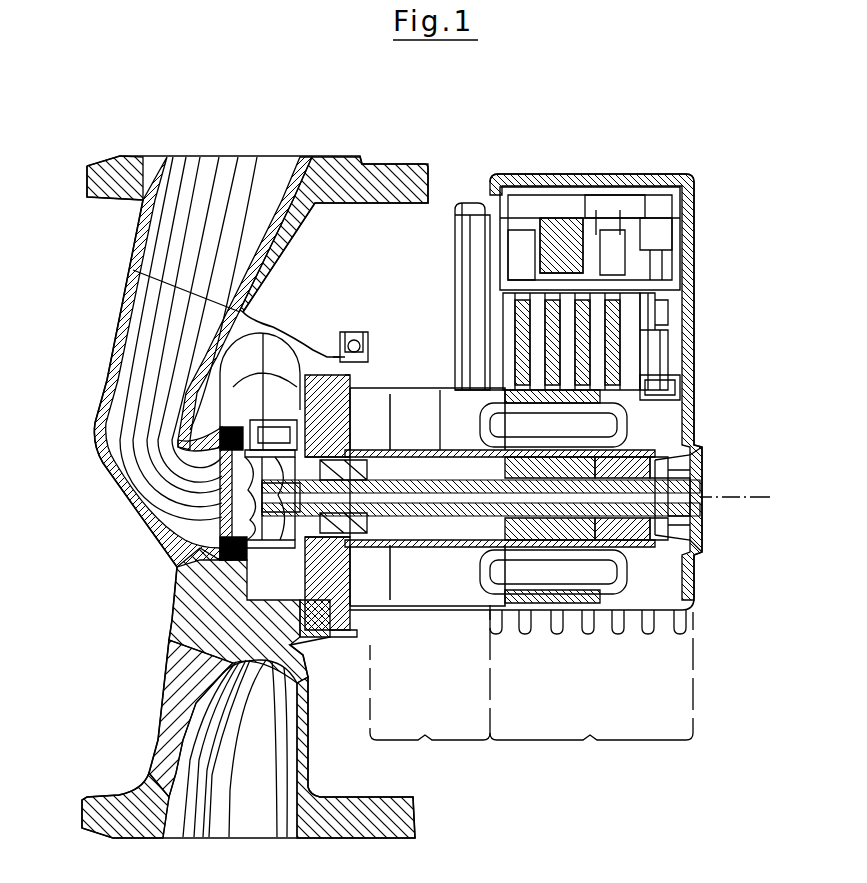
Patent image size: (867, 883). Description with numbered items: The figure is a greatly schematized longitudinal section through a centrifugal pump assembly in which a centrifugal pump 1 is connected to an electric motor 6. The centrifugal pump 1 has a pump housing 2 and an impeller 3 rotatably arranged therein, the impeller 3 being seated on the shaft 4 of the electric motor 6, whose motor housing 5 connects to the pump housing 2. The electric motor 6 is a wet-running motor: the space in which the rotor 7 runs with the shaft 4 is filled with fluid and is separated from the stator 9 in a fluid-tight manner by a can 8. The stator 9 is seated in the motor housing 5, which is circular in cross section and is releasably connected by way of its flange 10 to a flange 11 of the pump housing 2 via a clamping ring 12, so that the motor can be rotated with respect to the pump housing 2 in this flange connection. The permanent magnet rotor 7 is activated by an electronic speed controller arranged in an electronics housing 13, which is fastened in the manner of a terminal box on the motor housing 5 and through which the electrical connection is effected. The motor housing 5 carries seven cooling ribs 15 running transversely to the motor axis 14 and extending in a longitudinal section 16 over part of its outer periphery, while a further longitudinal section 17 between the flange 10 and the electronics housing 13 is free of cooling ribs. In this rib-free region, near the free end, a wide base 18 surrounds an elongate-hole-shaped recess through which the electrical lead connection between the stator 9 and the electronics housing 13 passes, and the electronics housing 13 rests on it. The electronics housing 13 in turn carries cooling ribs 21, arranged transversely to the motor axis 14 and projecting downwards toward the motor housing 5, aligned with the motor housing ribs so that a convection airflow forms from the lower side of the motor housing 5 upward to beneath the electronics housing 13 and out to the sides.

The centrifugal pump 1 is at (238, 152).
The pump housing 2 is at (177, 630).
The impeller 3 is at (223, 560).
The shaft 4 is at (457, 517).
The motor housing 5 is at (693, 611).
The electric motor 6 is at (620, 645).
The rotor 7 is at (535, 555).
The can 8 is at (428, 445).
The stator 9 is at (545, 548).
The flange 10 is at (377, 620).
The flange 11 is at (320, 637).
The clamping ring 12 is at (343, 632).
The electronics housing 13 is at (558, 167).
The motor axis 14 is at (740, 497).
The cooling ribs 15 is at (548, 618).
The longitudinal section 16 is at (591, 695).
The longitudinal section 17 is at (430, 692).
The base 18 is at (675, 383).
The cooling ribs 21 is at (655, 300).